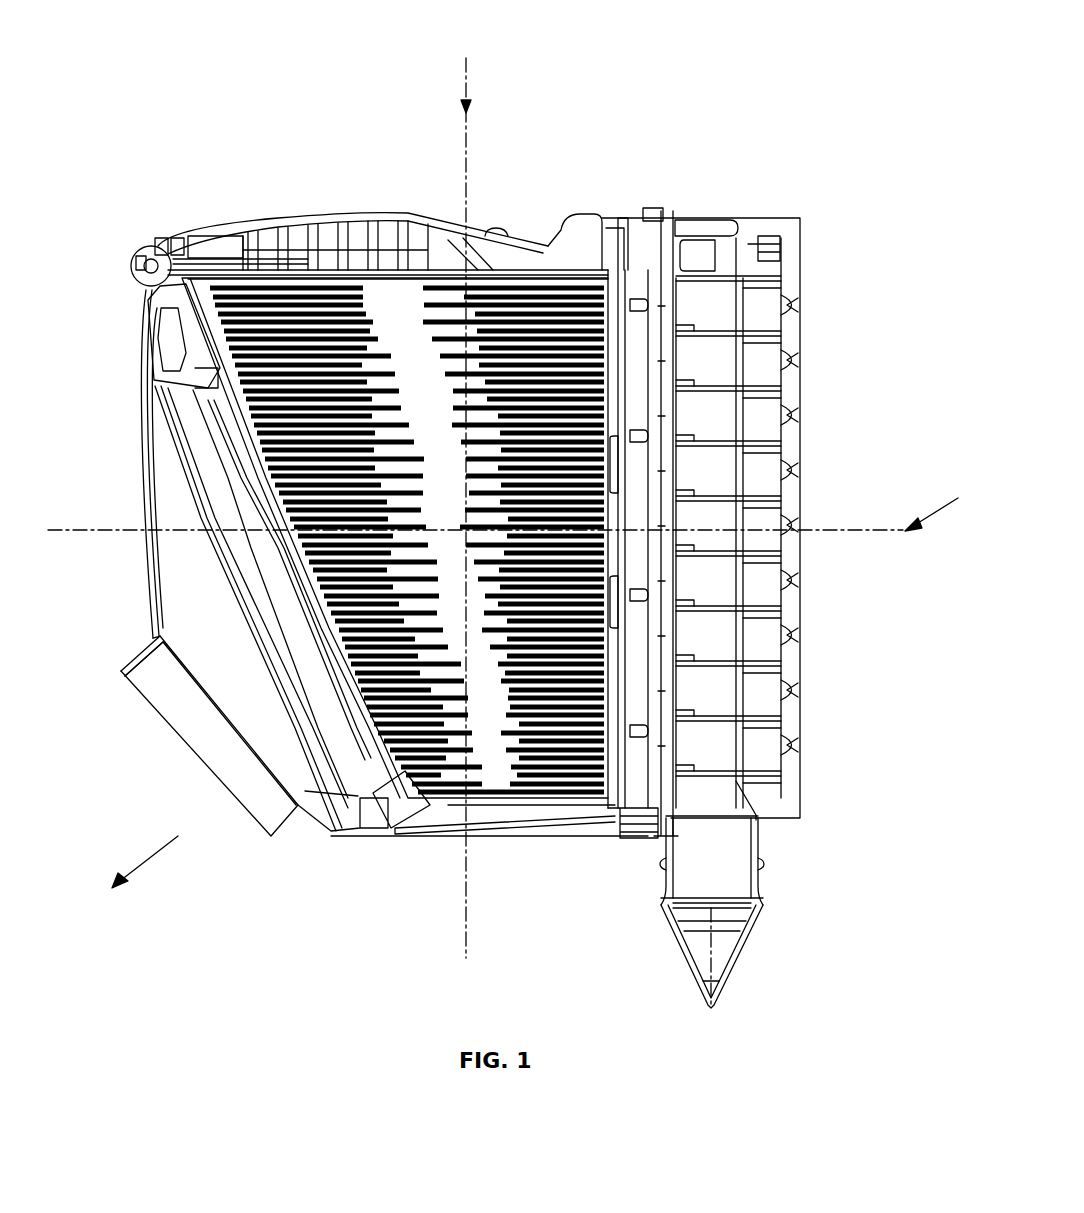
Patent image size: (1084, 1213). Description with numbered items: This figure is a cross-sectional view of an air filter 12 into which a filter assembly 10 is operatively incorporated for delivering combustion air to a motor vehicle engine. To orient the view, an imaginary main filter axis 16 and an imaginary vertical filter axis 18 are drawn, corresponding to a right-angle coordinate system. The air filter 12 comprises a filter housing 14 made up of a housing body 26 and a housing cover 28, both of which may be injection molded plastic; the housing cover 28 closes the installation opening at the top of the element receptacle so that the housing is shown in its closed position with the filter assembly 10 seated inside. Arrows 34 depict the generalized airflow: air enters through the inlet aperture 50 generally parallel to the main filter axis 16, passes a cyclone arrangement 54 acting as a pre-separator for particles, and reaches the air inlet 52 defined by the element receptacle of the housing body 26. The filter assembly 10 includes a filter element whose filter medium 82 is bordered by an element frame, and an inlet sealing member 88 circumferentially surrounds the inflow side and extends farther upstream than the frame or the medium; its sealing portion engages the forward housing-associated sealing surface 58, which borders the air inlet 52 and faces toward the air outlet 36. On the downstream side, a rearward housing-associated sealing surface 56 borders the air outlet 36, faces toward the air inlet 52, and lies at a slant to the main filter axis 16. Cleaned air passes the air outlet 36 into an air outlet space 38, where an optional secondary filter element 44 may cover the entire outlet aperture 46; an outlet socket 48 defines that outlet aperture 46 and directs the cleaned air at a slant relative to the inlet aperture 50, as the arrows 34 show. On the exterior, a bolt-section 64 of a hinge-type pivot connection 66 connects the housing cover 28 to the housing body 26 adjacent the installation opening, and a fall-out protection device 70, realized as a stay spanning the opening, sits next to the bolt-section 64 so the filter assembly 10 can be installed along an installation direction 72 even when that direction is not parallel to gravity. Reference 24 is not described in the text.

The air filter 12 is at (122, 54).
The installation direction 72 is at (462, 50).
The housing cover 28 is at (340, 209).
The fall-out protection device 70 is at (172, 238).
The hinge-type pivot connection 66 is at (130, 254).
The bolt-section 64 is at (130, 266).
The filter medium 82 is at (400, 296).
The forward housing-associated sealing surface 58 is at (652, 203).
The cyclone arrangement 54 is at (760, 230).
The inlet sealing member 88 is at (620, 352).
The inlet aperture 50 is at (782, 425).
The air outlet 36 is at (220, 400).
The rearward housing-associated sealing surface 56 is at (247, 450).
The air outlet space 38 is at (165, 597).
The outlet socket 48 is at (130, 653).
The outlet aperture 46 is at (162, 718).
The arrows 34 is at (535, 674).
The main filter axis 16 is at (880, 530).
The filter assembly 10 is at (577, 635).
The air inlet 52 is at (620, 682).
The secondary filter element 44 is at (350, 743).
The filter housing 14 is at (409, 829).
The housing body 26 is at (524, 832).
The outlet fitting 24 is at (630, 830).
The vertical filter axis 18 is at (462, 934).